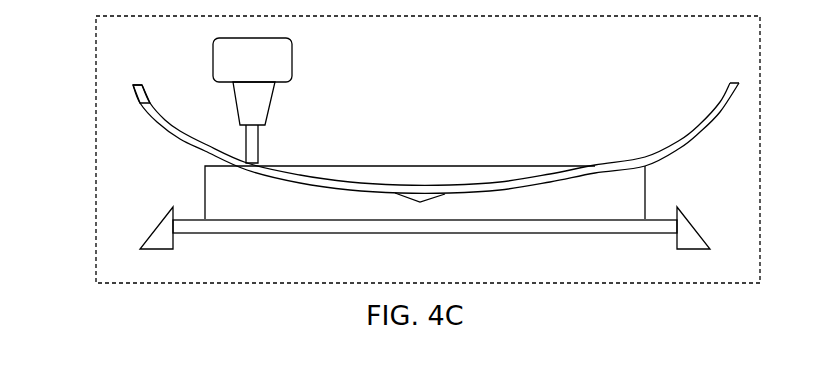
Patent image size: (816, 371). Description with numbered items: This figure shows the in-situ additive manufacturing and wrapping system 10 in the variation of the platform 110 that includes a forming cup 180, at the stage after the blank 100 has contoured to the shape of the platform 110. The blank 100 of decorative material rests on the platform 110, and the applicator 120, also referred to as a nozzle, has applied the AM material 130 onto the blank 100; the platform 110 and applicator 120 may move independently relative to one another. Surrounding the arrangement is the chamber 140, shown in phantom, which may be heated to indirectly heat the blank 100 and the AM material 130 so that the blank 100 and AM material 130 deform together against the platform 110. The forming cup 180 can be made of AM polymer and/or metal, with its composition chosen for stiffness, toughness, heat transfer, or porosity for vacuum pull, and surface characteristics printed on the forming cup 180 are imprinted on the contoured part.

The in-situ additive manufacturing and wrapping system 10 is at (676, 80).
The blank 100 is at (137, 83).
The platform 110 is at (253, 234).
The applicator 120 is at (272, 102).
The AM material 130 is at (410, 164).
The chamber 140 is at (94, 140).
The forming cup 180 is at (453, 213).